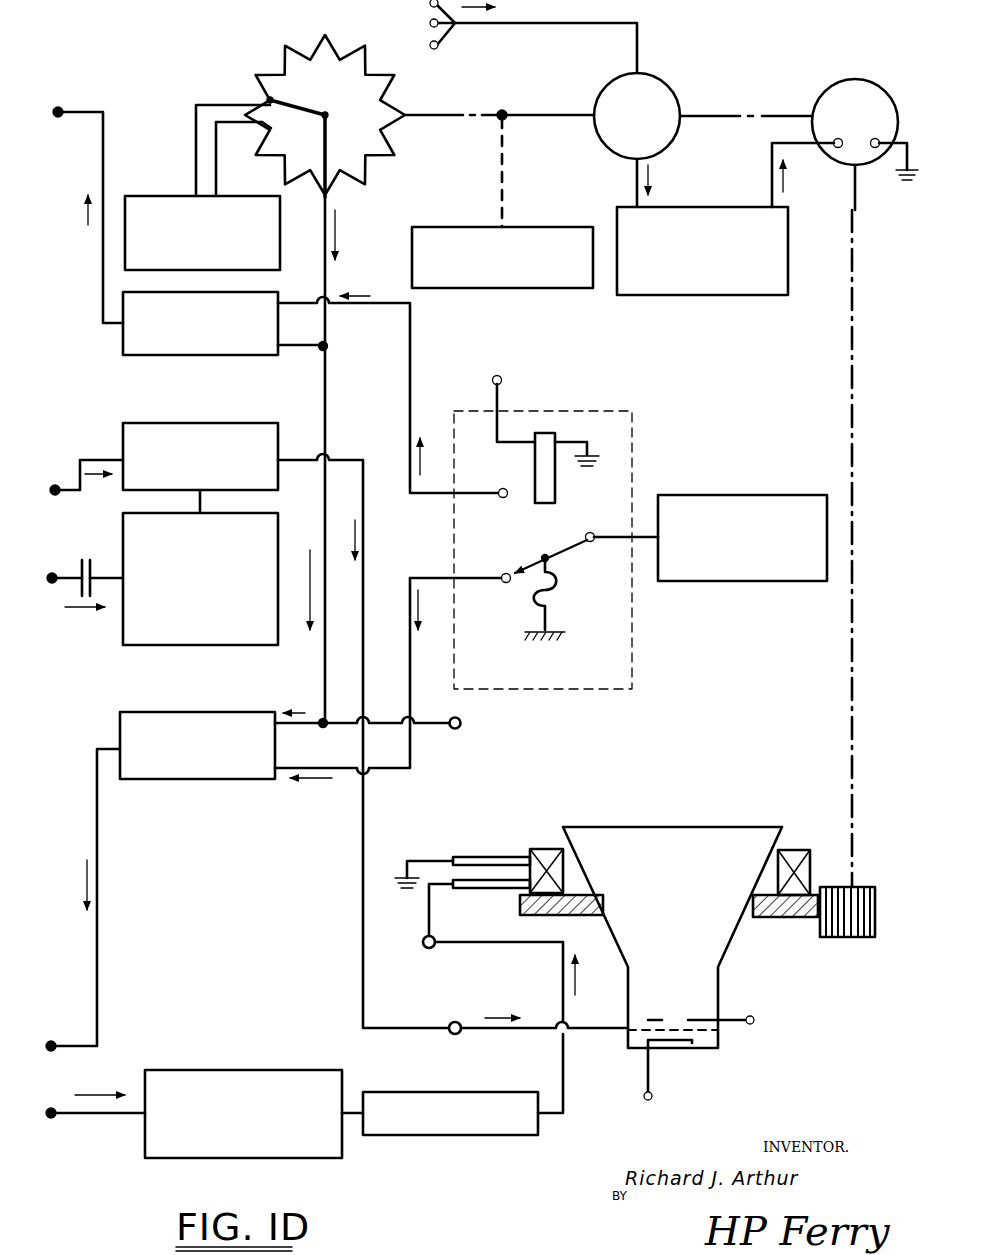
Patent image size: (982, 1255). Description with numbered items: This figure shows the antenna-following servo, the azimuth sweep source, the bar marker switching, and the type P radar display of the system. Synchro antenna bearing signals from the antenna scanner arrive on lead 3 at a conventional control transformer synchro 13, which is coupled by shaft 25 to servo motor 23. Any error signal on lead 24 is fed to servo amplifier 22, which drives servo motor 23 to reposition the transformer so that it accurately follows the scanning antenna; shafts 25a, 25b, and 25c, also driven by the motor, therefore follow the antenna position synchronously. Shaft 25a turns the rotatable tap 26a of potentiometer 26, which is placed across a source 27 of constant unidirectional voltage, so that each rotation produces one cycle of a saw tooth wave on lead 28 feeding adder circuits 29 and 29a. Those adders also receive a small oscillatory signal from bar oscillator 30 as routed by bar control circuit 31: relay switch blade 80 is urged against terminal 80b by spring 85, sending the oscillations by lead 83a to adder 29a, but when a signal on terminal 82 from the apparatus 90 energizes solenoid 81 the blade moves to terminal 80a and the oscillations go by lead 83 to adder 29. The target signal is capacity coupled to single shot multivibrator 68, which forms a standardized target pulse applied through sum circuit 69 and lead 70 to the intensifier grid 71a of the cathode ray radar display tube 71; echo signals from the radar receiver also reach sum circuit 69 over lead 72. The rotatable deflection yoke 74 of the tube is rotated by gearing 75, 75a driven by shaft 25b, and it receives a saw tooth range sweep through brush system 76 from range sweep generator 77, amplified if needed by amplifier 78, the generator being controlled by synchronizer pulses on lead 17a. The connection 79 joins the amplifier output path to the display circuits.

The lead 3 is at (548, 25).
The control transformer synchro 13 is at (675, 90).
The servo amplifier 22 is at (692, 296).
The servo motor 23 is at (857, 78).
The lead 24 is at (634, 178).
The shaft 25 is at (715, 120).
The shaft 25a is at (495, 112).
The shaft 25b is at (850, 380).
The shaft 25c is at (495, 190).
The potentiometer 26 is at (405, 105).
The rotatable tap 26a is at (297, 103).
The source of constant unidirectional voltage 27 is at (164, 195).
The lead 28 is at (326, 405).
The adder circuit 29 is at (175, 357).
The adder circuit 29a is at (222, 780).
The bar oscillator 30 is at (755, 495).
The bar control circuit 31 is at (624, 405).
The single shot multivibrator 68 is at (178, 647).
The sum circuit 69 is at (222, 422).
The lead 70 is at (368, 545).
The cathode ray radar display tube 71 is at (718, 985).
The intensifier grid 71a is at (712, 1033).
The lead 72 is at (90, 445).
The deflection yoke 74 is at (793, 848).
The gearing 75 is at (790, 920).
The gearing 75a is at (852, 938).
The brush system 76 is at (500, 848).
The range sweep generator 77 is at (220, 1070).
The amplifier 78 is at (450, 1137).
The sweep line 79 is at (564, 1068).
The relay switch blade 80 is at (572, 553).
The terminal 80a is at (505, 500).
The terminal 80b is at (503, 585).
The solenoid 81 is at (557, 493).
The terminal 82 is at (502, 377).
The lead 83 is at (411, 352).
The lead 83a is at (411, 740).
The spring 85 is at (556, 592).
The apparatus 90 is at (535, 290).
The lead 17a is at (112, 1115).